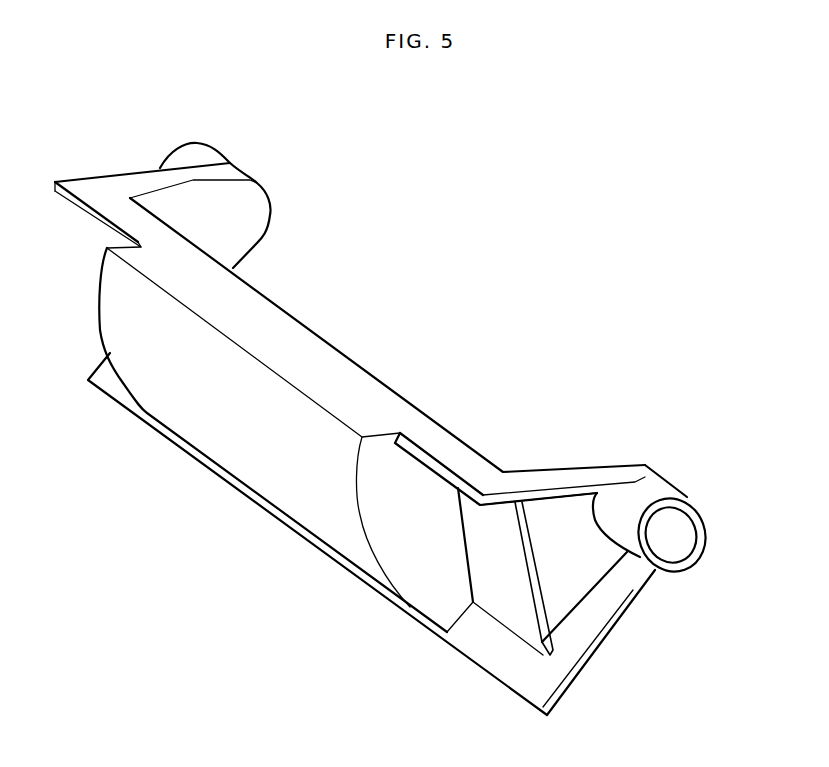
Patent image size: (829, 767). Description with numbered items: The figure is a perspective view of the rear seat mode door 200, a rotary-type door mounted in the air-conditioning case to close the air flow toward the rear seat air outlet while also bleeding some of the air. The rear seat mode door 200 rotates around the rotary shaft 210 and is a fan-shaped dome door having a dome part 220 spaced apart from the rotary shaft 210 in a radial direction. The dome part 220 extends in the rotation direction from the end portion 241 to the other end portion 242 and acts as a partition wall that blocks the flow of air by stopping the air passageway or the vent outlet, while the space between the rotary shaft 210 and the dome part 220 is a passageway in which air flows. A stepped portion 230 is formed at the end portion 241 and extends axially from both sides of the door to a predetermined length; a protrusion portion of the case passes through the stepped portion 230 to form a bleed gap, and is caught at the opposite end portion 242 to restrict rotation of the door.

The rear seat mode door 200 is at (449, 334).
The rotary shaft 210 is at (702, 498).
The dome part 220 is at (265, 457).
The stepped portion 230 is at (91, 223).
The end portion 241 is at (263, 333).
The end portion 242 is at (512, 670).